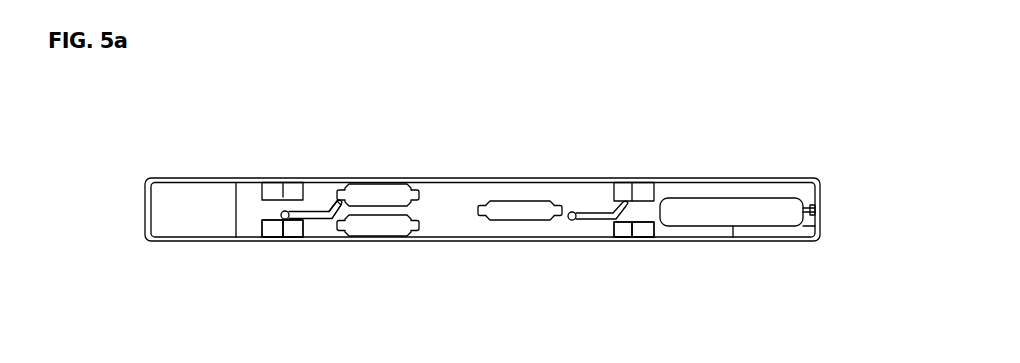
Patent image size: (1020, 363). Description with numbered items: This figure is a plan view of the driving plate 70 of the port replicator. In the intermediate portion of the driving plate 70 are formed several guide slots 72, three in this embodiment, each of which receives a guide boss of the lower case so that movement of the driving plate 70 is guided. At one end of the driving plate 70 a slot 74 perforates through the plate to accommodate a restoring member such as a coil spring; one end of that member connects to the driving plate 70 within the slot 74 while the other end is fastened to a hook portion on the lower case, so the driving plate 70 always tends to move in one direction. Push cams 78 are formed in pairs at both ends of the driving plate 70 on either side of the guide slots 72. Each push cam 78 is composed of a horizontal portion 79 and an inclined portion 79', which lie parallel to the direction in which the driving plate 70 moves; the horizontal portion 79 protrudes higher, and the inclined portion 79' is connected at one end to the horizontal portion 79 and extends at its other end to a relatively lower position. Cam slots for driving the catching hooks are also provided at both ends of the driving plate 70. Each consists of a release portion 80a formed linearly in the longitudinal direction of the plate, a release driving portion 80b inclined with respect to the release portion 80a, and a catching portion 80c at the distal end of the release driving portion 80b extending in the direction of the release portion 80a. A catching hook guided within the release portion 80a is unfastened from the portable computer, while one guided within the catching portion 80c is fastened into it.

The driving plate 70 is at (600, 163).
The guide slot 72 is at (397, 222).
The slot 74 is at (748, 221).
The push cam 78 is at (306, 304).
The horizontal portion 79 is at (447, 262).
The inclined portion 79' is at (479, 262).
The release portion 80a is at (286, 211).
The release driving portion 80b is at (316, 211).
The catching portion 80c is at (331, 204).